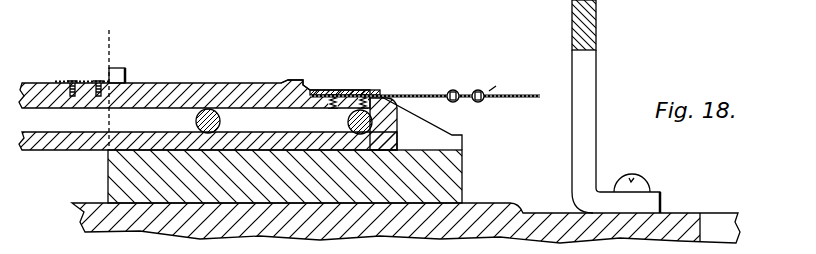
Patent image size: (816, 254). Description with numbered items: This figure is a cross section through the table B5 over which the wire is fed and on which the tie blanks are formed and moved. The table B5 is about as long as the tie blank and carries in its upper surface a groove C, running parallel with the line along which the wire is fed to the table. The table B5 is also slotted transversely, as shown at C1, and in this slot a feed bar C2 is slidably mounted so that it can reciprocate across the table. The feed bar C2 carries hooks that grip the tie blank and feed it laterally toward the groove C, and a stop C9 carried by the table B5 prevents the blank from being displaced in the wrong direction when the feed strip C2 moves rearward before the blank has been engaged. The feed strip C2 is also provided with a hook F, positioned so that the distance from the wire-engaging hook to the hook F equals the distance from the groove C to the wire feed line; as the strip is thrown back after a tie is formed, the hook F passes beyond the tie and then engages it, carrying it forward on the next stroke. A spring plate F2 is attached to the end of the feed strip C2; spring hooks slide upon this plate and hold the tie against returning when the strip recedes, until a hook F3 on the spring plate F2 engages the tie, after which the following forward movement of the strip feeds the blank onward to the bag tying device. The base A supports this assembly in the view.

The base A is at (673, 219).
The table B5 is at (455, 172).
The groove C is at (311, 90).
The transverse slot C1 is at (452, 132).
The feed bar C2 is at (198, 83).
The stop C9 is at (125, 72).
The hook F is at (297, 80).
The spring plate F2 is at (526, 95).
The hook on spring plate F3 is at (484, 90).